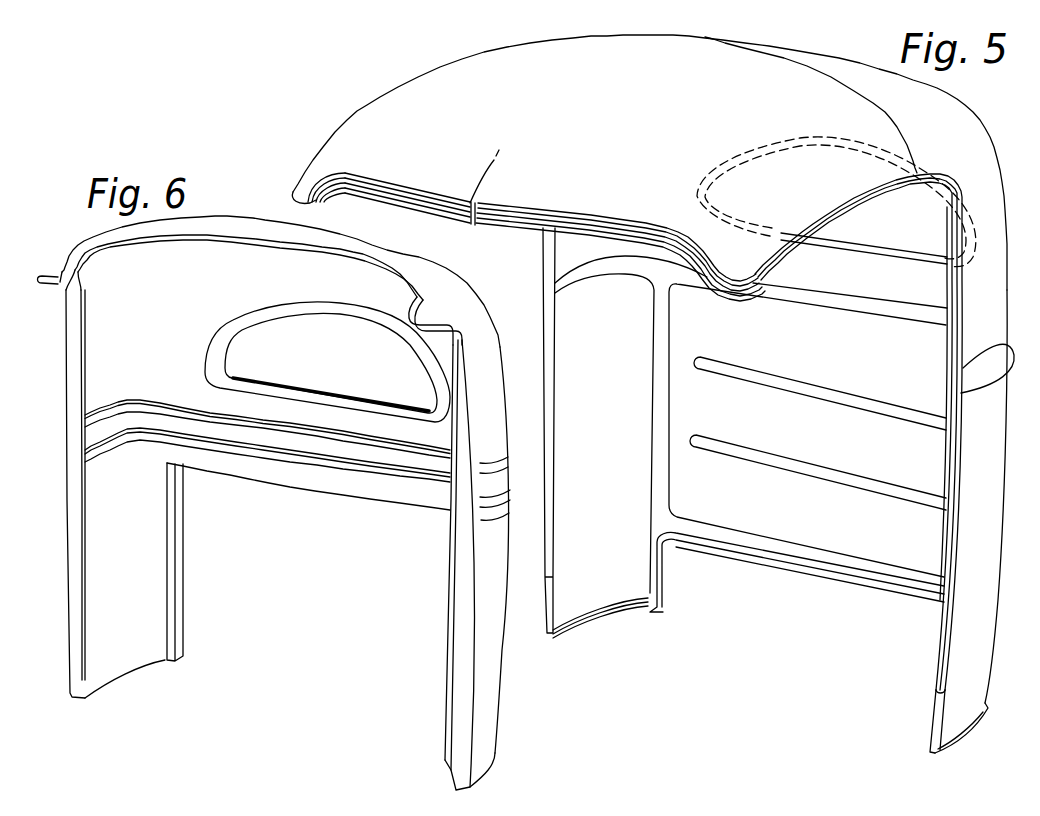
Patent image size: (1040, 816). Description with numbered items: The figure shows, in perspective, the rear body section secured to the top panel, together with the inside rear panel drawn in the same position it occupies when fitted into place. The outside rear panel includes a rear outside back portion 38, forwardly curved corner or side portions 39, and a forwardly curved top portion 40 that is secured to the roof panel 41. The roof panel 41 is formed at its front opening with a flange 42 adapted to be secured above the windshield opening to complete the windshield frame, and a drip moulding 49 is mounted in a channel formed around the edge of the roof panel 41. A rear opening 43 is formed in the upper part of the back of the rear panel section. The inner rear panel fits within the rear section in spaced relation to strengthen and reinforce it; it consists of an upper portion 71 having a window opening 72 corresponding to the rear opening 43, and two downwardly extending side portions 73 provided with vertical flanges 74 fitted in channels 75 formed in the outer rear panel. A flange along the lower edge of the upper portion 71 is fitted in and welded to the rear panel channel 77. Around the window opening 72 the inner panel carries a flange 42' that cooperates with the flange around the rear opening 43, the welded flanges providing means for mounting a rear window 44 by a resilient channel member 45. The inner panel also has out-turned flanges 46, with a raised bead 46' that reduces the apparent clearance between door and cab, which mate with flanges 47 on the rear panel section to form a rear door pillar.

In FIG. 5, the rear outside back portion 38 is at (813, 540).
In FIG. 5, the forwardly curved corner or side portions 39 is at (988, 516).
In FIG. 5, the forwardly curved top portion 40 is at (957, 112).
In FIG. 5, the roof panel 41 is at (513, 55).
In FIG. 5, the flange 42 is at (536, 237).
In FIG. 6, the flange around the window opening 42' is at (331, 388).
In FIG. 5, the rear opening 43 is at (852, 227).
In FIG. 5, the rear window 44 is at (887, 248).
In FIG. 5, the resilient channel member 45 is at (850, 286).
In FIG. 6, the out-turned flanges 46 is at (307, 540).
In FIG. 6, the raised bead 46' is at (36, 299).
In FIG. 5, the flanges 47 is at (957, 600).
In FIG. 5, the drip moulding 49 is at (813, 211).
In FIG. 6, the upper portion 71 is at (210, 253).
In FIG. 6, the window opening 72 is at (291, 376).
In FIG. 6, the downwardly extending side portions 73 is at (140, 540).
In FIG. 6, the vertical flanges 74 is at (176, 500).
In FIG. 5, the channels 75 is at (663, 342).
In FIG. 5, the rear panel channel 77 is at (843, 308).